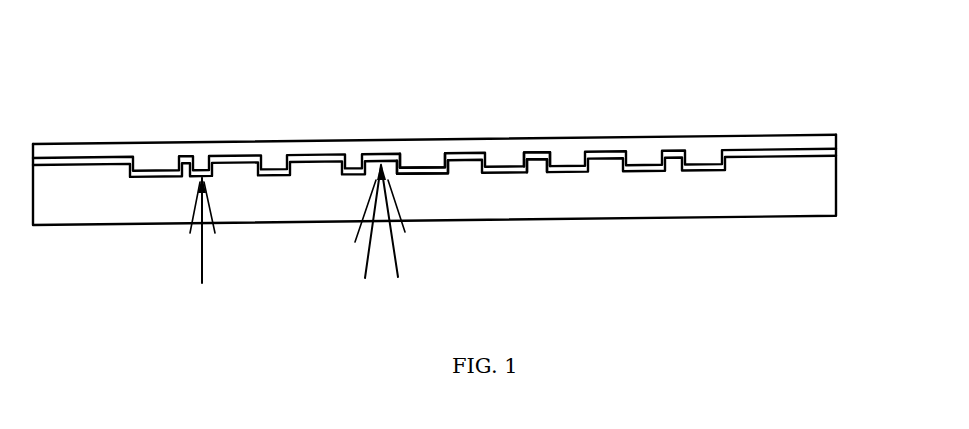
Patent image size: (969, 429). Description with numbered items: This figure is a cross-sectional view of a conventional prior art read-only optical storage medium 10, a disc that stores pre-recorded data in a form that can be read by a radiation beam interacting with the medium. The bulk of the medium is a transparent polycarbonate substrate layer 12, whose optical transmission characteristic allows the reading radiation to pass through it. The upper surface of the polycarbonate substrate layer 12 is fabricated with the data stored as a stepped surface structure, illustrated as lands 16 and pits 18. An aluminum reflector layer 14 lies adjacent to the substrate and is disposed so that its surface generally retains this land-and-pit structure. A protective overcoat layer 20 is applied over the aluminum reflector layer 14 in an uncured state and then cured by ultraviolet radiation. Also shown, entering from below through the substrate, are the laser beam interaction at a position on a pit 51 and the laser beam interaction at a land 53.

The read-only optical storage medium 10 is at (318, 100).
The transparent polycarbonate substrate layer 12 is at (743, 192).
The aluminum reflector layer 14 is at (772, 155).
The lands 16 is at (542, 155).
The pits 18 is at (425, 170).
The protective overcoat layer 20 is at (638, 148).
The laser beam interaction at a pit 51 is at (366, 263).
The laser beam interaction at a land 53 is at (202, 263).